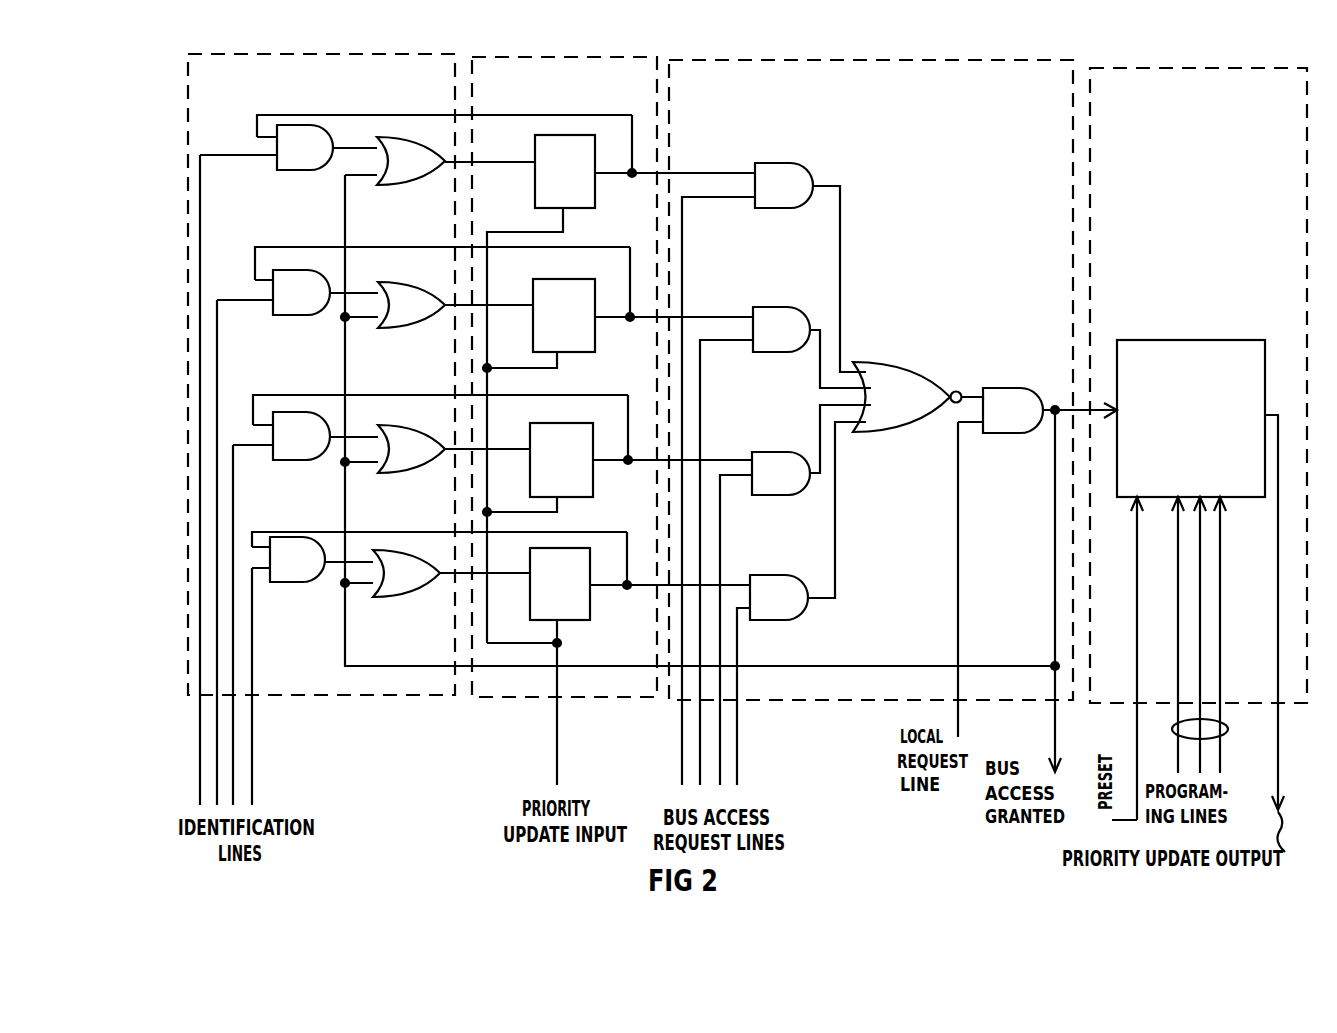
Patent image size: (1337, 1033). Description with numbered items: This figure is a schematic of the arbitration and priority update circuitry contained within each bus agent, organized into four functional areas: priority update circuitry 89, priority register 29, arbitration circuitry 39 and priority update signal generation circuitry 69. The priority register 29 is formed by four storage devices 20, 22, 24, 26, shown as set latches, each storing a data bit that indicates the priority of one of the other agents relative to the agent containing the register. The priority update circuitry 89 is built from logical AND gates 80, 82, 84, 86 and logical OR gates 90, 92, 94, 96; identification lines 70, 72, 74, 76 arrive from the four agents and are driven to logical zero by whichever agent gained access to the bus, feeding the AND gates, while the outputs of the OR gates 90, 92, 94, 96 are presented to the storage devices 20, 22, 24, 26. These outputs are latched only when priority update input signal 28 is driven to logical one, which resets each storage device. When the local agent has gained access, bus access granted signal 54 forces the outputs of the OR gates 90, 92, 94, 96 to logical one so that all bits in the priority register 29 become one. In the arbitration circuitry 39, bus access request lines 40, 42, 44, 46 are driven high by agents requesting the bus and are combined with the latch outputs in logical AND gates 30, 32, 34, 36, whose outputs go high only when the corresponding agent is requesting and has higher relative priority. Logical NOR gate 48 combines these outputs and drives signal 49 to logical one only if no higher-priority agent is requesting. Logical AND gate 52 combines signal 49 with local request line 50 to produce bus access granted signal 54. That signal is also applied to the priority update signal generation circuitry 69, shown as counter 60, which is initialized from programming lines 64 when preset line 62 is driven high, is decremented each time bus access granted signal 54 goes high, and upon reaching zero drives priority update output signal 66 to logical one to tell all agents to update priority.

The storage device 20 is at (595, 193).
The storage device 22 is at (595, 337).
The storage device 24 is at (593, 482).
The storage device 26 is at (590, 605).
The priority update input signal 28 is at (557, 752).
The priority register 29 is at (556, 109).
The logical AND gate 30 is at (792, 208).
The logical AND gate 32 is at (790, 352).
The logical AND gate 34 is at (790, 495).
The logical AND gate 36 is at (787, 620).
The arbitration circuitry 39 is at (829, 120).
The bus access request line 40 is at (675, 752).
The bus access request line 42 is at (697, 767).
The bus access request line 44 is at (720, 757).
The bus access request line 46 is at (737, 768).
The logical NOR gate 48 is at (914, 403).
The signal 49 is at (963, 394).
The local request line 50 is at (959, 738).
The logical AND gate 52 is at (1013, 433).
The bus access granted signal 54 is at (1062, 745).
The counter 60 is at (1140, 340).
The preset line 62 is at (1135, 754).
The programming lines 64 is at (1178, 733).
The priority update output signal 66 is at (1283, 760).
The priority update signal generation circuitry 69 is at (1180, 157).
The identification line 70 is at (200, 768).
The identification line 72 is at (217, 775).
The identification line 74 is at (233, 782).
The identification line 76 is at (252, 797).
The logical AND gate 80 is at (303, 170).
The logical AND gate 82 is at (300, 315).
The logical AND gate 84 is at (300, 460).
The logical AND gate 86 is at (297, 582).
The priority update circuitry 89 is at (306, 109).
The logical OR gate 90 is at (410, 185).
The logical OR gate 92 is at (410, 328).
The logical OR gate 94 is at (410, 473).
The logical OR gate 96 is at (405, 597).